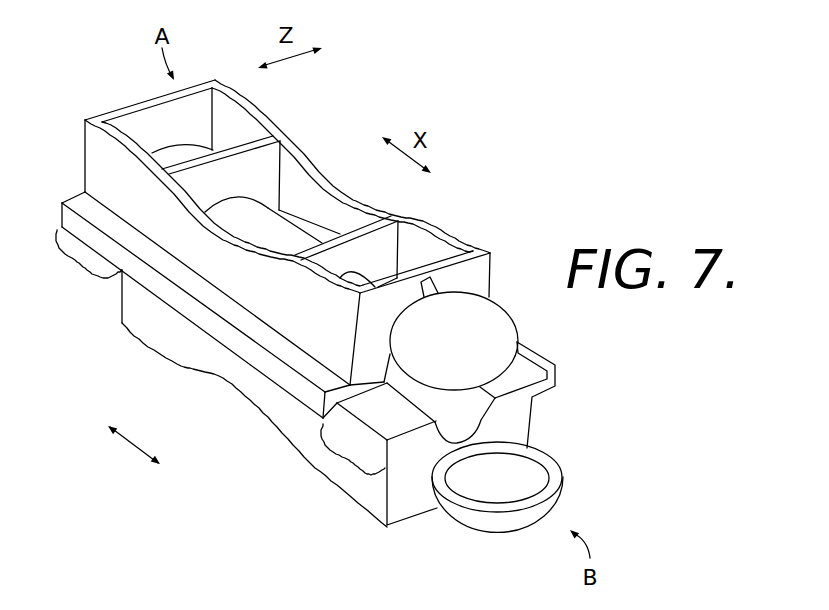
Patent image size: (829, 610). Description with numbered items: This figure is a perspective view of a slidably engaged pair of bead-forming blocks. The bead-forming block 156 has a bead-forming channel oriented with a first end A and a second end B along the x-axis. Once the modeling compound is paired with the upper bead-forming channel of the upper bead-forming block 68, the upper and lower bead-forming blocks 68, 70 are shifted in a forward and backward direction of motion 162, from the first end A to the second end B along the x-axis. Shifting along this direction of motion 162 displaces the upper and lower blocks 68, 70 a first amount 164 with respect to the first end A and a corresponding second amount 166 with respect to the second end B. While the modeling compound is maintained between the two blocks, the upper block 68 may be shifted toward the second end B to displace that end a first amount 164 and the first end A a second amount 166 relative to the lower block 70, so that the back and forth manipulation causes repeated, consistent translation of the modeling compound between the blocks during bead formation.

The bead-forming block 156 is at (116, 74).
The upper bead-forming block 68 is at (93, 162).
The lower bead-forming block 70 is at (147, 333).
The first amount 164 is at (78, 265).
The second amount 166 is at (343, 465).
The direction of motion 162 is at (123, 451).